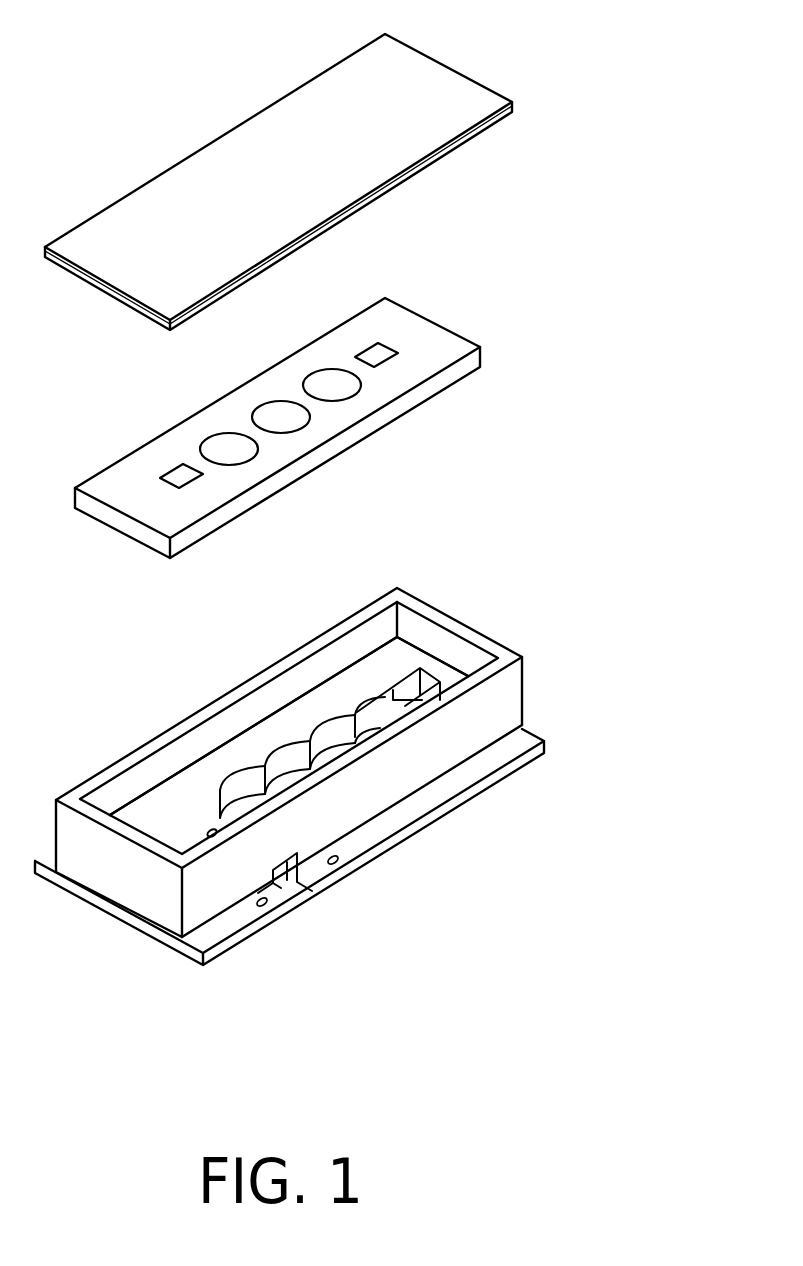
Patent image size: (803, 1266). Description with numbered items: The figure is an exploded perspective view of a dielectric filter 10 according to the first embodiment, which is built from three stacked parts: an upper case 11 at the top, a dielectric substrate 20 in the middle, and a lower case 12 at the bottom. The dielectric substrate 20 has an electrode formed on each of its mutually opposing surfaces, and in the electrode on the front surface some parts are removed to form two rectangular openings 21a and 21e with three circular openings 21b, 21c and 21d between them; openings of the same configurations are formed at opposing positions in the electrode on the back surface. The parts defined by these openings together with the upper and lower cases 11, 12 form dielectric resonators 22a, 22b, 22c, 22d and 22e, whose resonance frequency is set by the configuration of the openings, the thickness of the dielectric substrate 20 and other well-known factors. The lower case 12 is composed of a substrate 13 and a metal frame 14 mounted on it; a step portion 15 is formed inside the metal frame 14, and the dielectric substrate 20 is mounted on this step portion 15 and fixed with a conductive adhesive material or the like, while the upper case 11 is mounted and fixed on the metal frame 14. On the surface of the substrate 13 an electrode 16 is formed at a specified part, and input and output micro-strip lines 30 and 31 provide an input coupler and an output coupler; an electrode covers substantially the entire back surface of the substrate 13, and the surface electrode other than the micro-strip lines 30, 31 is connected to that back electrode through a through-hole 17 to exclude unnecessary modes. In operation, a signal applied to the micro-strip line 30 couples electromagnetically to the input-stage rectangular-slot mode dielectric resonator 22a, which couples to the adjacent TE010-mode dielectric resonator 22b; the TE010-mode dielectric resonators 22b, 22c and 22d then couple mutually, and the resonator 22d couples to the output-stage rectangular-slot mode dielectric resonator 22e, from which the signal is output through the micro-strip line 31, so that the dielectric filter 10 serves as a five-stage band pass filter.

The dielectric filter 10 is at (165, 45).
The upper case 11 is at (442, 88).
The lower case 12 is at (543, 665).
The substrate 13 is at (501, 777).
The metal frame 14 is at (123, 894).
The step portion 15 is at (413, 658).
The electrode 16 is at (213, 935).
The through-hole 17 is at (266, 910).
The dielectric substrate 20 is at (470, 364).
The rectangular opening 21a is at (178, 480).
The circular opening 21b is at (227, 447).
The circular opening 21c is at (277, 413).
The circular opening 21d is at (327, 381).
The rectangular opening 21e is at (373, 352).
The input-stage rectangular-slot mode dielectric resonator 22a is at (210, 490).
The TE010-mode dielectric resonator 22b is at (263, 462).
The TE010-mode dielectric resonator 22c is at (312, 432).
The TE010-mode dielectric resonator 22d is at (365, 400).
The output-stage rectangular-slot mode dielectric resonator 22e is at (403, 370).
The input micro-strip line 30 is at (300, 896).
The output micro-strip line 31 is at (355, 713).